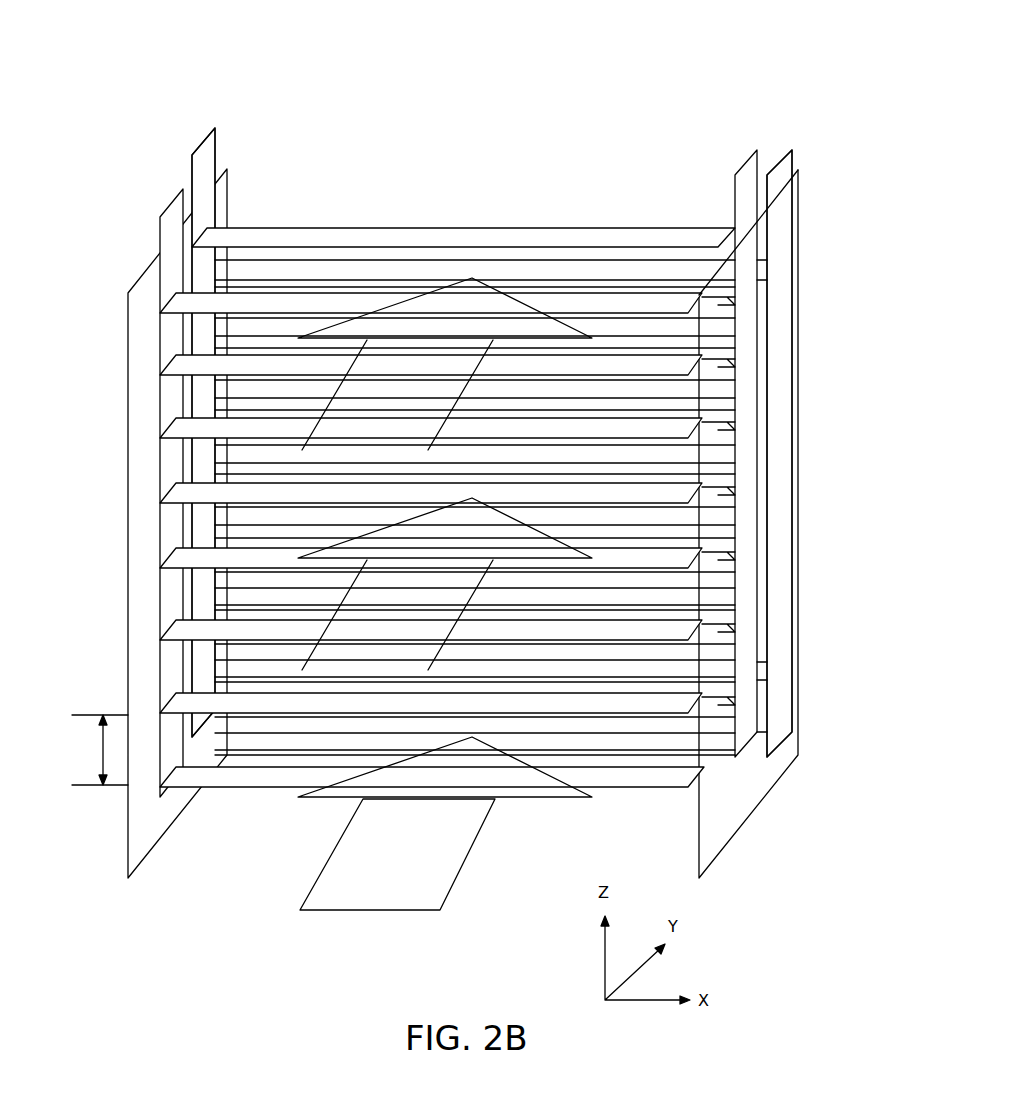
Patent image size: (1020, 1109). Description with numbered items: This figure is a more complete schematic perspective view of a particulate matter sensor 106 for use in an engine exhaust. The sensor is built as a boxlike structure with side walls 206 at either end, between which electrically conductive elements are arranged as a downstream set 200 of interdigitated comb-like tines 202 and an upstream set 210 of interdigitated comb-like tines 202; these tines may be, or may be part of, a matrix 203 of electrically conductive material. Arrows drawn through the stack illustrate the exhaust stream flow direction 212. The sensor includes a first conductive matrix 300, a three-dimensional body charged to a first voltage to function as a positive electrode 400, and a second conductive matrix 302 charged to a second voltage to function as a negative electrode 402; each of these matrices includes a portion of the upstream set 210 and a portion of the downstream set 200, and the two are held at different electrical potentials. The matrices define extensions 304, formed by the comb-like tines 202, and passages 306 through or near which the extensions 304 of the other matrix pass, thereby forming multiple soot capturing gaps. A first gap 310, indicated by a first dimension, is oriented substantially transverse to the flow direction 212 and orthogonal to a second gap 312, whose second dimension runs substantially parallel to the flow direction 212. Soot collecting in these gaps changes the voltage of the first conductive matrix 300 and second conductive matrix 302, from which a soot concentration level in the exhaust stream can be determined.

The particulate matter sensor 106 is at (498, 358).
The downstream set of interdigitated comb-like tines 200 is at (211, 130).
The tines 202 is at (355, 228).
The matrix of electrically conductive material 203 is at (512, 112).
The side walls 206 is at (155, 848).
The upstream set of interdigitated comb-like tines 210 is at (165, 215).
The exhaust stream flow direction 212 is at (468, 852).
The first conductive matrix 300 is at (207, 140).
The second conductive matrix 302 is at (758, 150).
The extensions 304 is at (650, 788).
The passages 306 is at (600, 782).
The first gap 310 is at (78, 742).
The second gap 312 is at (237, 757).
The positive electrode 400 is at (182, 192).
The negative electrode 402 is at (790, 150).